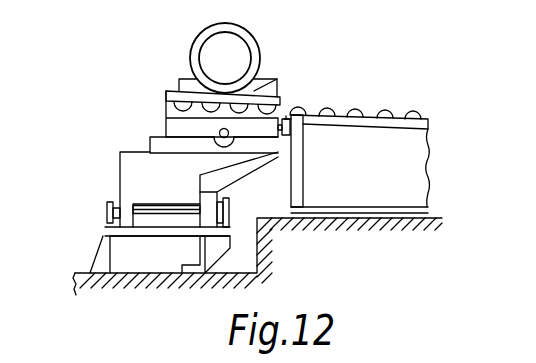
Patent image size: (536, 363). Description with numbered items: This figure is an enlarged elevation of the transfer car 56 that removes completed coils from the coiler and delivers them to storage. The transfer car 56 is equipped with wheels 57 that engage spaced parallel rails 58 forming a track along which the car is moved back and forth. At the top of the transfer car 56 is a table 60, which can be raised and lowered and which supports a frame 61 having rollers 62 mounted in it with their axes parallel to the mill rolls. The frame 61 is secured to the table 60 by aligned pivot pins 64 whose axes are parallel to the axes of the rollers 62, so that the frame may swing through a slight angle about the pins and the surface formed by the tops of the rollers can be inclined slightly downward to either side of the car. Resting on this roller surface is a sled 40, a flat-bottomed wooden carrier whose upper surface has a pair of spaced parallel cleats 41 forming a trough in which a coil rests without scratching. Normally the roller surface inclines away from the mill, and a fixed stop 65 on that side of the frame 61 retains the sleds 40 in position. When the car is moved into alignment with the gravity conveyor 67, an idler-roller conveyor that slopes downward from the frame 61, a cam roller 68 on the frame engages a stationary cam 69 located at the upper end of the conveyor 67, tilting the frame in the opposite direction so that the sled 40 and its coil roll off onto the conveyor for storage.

The sled 40 is at (178, 79).
The cleats 41 is at (189, 68).
The transfer car 56 is at (126, 168).
The wheels 57 is at (108, 215).
The rails 58 is at (103, 255).
The table 60 is at (152, 144).
The frame 61 is at (170, 120).
The rollers 62 is at (256, 90).
The pivot pins 64 is at (227, 131).
The fixed stop 65 is at (170, 93).
The gravity conveyor 67 is at (353, 112).
The cam roller 68 is at (286, 135).
The cam 69 is at (286, 116).